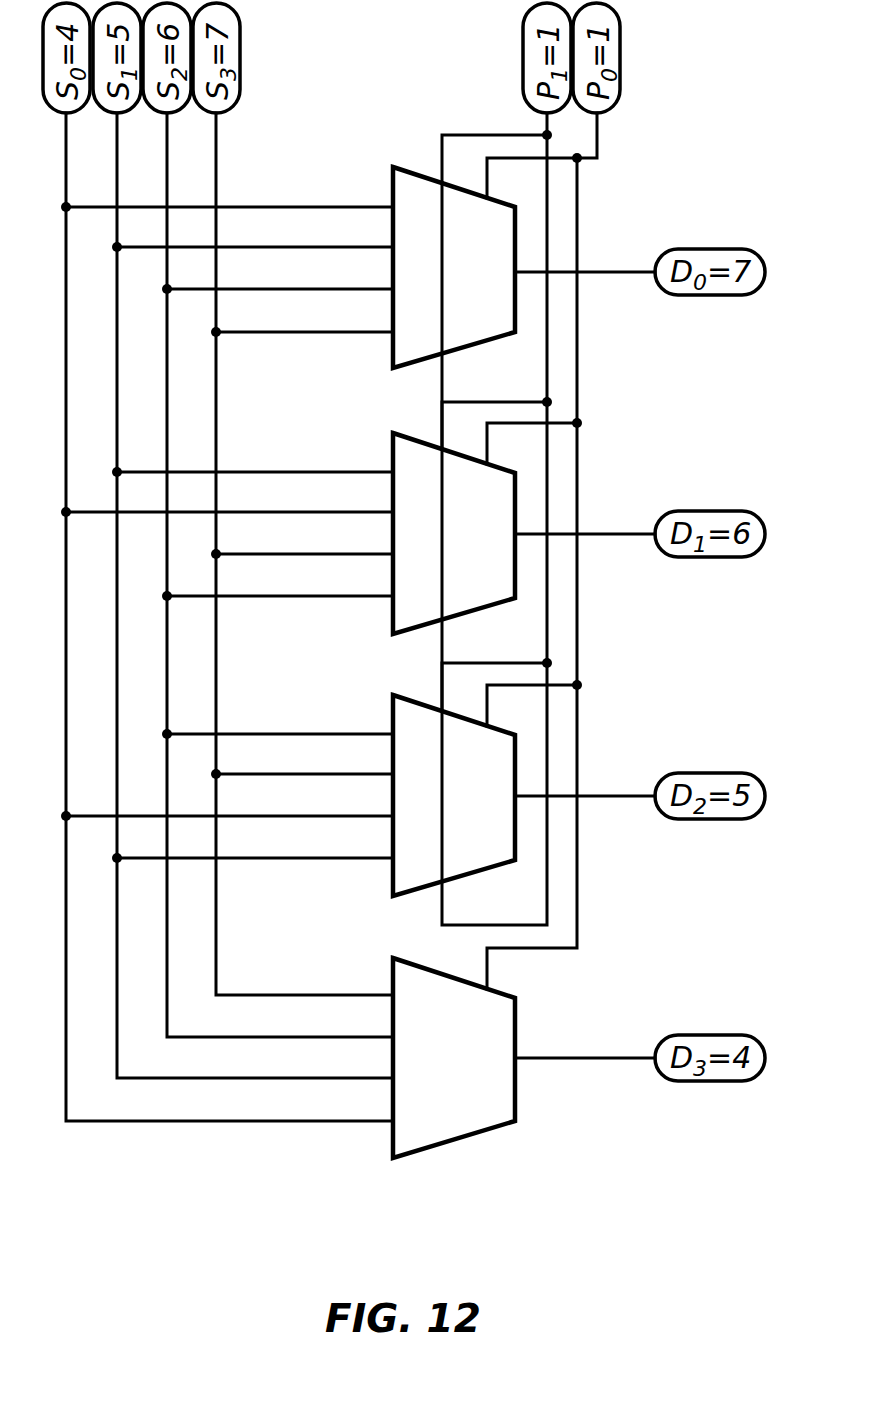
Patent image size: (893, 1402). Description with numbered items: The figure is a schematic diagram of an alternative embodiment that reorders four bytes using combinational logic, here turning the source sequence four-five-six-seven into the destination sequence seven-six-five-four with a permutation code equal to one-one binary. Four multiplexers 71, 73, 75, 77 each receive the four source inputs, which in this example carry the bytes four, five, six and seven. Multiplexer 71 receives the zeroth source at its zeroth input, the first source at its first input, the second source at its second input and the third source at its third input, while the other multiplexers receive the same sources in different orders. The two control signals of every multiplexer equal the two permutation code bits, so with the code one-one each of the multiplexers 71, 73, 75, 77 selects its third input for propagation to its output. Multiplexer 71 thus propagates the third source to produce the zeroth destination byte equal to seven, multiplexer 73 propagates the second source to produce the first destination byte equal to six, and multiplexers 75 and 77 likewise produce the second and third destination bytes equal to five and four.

The multiplexer 71 is at (473, 337).
The multiplexer 73 is at (470, 593).
The multiplexer 75 is at (458, 867).
The multiplexer 77 is at (502, 1087).